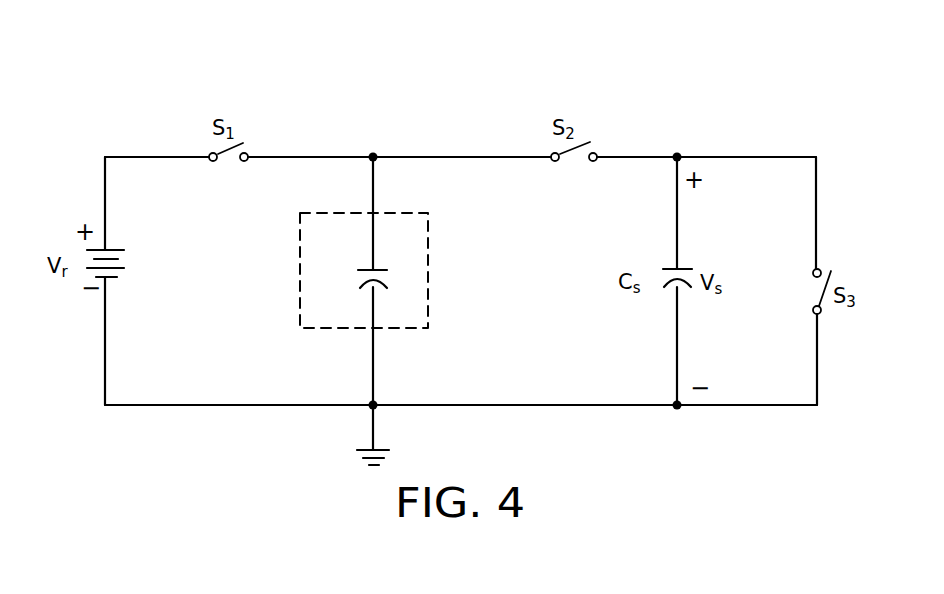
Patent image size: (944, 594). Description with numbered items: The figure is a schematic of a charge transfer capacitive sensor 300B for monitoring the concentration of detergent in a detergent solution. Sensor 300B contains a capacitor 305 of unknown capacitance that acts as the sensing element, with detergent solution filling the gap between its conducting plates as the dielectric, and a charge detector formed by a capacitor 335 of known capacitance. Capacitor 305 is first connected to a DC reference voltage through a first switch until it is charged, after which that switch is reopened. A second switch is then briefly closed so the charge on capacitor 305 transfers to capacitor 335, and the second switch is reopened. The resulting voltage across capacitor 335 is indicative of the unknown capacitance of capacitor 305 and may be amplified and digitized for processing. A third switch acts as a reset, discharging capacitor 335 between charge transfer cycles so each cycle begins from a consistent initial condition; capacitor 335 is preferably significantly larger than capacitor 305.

The sensor 300B is at (184, 100).
The capacitor 305 is at (429, 275).
The capacitor 335 is at (666, 265).